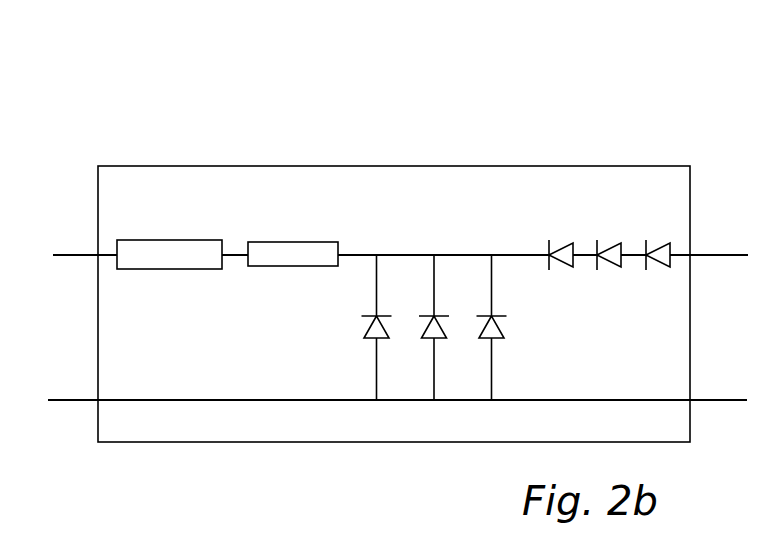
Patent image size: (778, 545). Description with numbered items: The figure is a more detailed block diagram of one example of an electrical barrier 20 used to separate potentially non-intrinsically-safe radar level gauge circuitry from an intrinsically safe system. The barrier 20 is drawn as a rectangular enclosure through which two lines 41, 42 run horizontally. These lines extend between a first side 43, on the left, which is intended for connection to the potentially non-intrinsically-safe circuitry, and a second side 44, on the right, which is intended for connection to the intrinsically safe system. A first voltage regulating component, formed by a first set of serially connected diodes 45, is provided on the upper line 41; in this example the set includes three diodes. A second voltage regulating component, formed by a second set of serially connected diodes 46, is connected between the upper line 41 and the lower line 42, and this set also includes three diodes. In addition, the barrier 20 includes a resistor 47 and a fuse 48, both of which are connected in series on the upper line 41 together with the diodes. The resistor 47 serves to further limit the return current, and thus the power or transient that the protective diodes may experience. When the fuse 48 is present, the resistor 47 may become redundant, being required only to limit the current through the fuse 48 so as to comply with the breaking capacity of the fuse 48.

The electrical barrier 20 is at (653, 121).
The first line 41 is at (406, 254).
The second line 42 is at (288, 401).
The first side 43 is at (49, 331).
The second side 44 is at (732, 338).
The first set of serially connected diodes 45 is at (558, 252).
The second set of serially connected diodes 46 is at (495, 323).
The resistor 47 is at (282, 257).
The fuse 48 is at (167, 257).